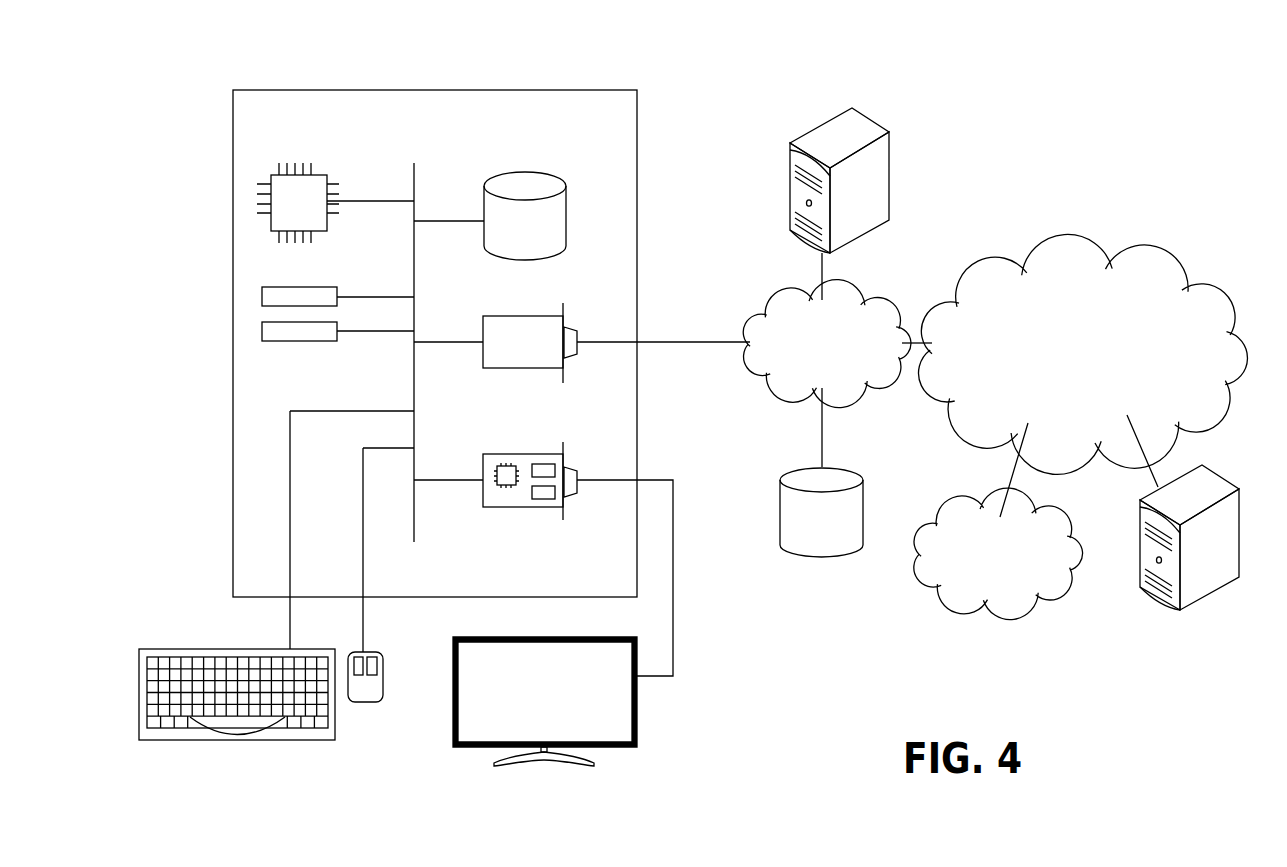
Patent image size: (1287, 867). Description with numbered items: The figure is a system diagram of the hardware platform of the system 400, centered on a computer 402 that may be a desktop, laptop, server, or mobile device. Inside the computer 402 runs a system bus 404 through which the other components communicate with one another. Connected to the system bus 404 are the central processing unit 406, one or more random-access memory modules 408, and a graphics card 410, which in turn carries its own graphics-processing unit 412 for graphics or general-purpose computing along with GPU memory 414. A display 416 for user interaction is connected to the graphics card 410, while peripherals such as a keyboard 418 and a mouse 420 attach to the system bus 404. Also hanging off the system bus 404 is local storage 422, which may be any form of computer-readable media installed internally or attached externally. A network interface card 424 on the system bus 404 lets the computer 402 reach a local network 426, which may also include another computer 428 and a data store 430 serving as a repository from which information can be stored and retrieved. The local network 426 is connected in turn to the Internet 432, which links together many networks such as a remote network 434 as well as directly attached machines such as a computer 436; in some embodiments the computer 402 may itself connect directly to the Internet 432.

The system 400 is at (298, 50).
The computer 402 is at (592, 88).
The system bus 404 is at (415, 172).
The central processing unit 406 is at (322, 169).
The random-access memory modules 408 is at (338, 331).
The graphics card 410 is at (483, 465).
The graphics-processing unit 412 is at (506, 486).
The GPU memory 414 is at (542, 500).
The display 416 is at (637, 727).
The keyboard 418 is at (240, 741).
The mouse 420 is at (362, 703).
The local storage 422 is at (568, 203).
The network interface card 424 is at (483, 328).
The local network 426 is at (872, 301).
The computer 428 is at (878, 121).
The data store 430 is at (855, 471).
The Internet 432 is at (1128, 267).
The remote network 434 is at (1052, 513).
The computer 436 is at (1215, 471).